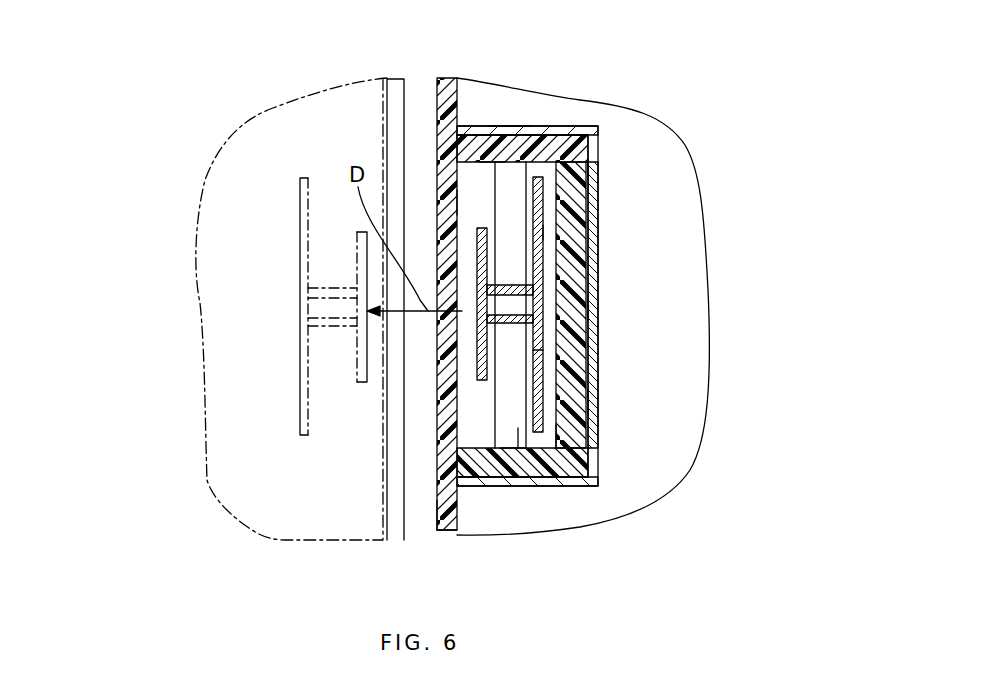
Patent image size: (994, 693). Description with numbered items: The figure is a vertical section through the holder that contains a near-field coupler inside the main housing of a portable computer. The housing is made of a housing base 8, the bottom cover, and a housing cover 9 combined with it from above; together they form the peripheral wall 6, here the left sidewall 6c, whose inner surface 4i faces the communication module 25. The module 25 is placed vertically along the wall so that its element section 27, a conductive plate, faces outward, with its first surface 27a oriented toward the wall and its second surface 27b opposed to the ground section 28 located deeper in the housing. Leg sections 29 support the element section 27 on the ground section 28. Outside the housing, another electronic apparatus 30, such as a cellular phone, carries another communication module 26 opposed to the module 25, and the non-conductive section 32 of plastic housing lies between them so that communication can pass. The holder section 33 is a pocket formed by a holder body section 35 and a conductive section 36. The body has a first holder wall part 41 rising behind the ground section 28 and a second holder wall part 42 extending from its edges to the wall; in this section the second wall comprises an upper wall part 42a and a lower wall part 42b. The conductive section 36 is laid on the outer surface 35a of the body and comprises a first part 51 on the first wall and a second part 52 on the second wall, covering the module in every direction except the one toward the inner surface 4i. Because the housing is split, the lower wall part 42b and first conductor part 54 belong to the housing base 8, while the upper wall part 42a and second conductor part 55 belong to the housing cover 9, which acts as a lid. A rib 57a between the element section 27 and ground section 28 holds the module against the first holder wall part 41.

The inner surface of the main housing 4i is at (457, 203).
The peripheral wall 6 is at (447, 130).
The left sidewall 6c is at (445, 498).
The housing base 8 is at (451, 518).
The housing cover 9 is at (448, 92).
The communication module 25 is at (554, 232).
The other communication module 26 is at (300, 393).
The element section 27 is at (491, 306).
The first surface 27a is at (481, 366).
The second surface 27b is at (536, 358).
The ground section 28 is at (545, 262).
The leg sections 29 is at (527, 346).
The other electronic apparatus 30 is at (230, 522).
The non-conductive section 32 is at (447, 410).
The holder section 33 is at (606, 324).
The holder body section 35 is at (590, 440).
The surface of the holder body section 35a is at (588, 168).
The conductive section 36 is at (572, 287).
The first holder wall part 41 is at (584, 198).
The second holder wall part 42 is at (543, 152).
The upper wall part 42a is at (492, 150).
The lower wall part 42b is at (511, 477).
The first part of the conductive section 51 is at (588, 403).
The second part of the conductive section 52 is at (481, 478).
The first conductor part 54 is at (592, 306).
The second conductor part 55 is at (510, 131).
The rib 57a is at (518, 448).